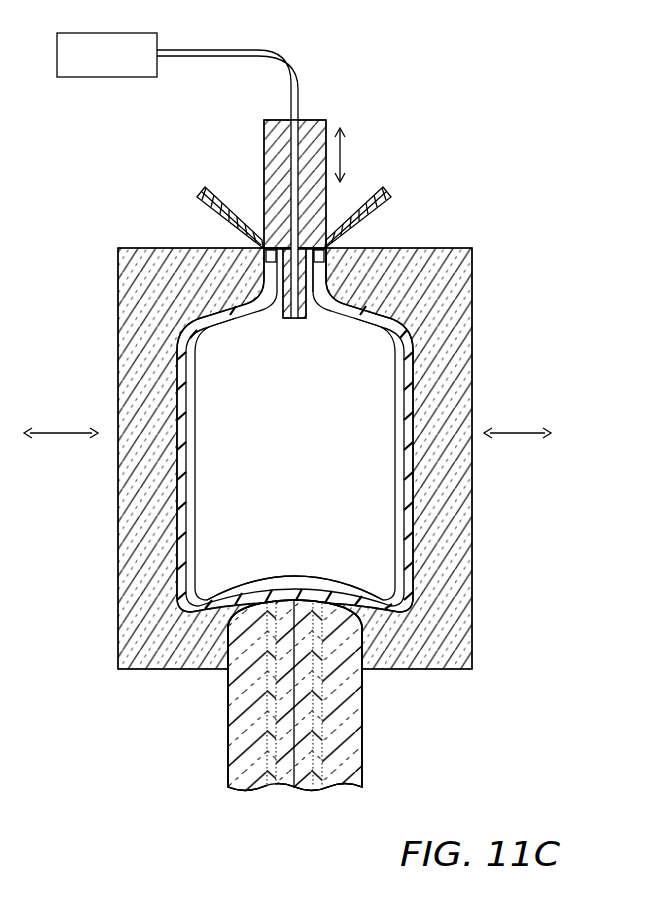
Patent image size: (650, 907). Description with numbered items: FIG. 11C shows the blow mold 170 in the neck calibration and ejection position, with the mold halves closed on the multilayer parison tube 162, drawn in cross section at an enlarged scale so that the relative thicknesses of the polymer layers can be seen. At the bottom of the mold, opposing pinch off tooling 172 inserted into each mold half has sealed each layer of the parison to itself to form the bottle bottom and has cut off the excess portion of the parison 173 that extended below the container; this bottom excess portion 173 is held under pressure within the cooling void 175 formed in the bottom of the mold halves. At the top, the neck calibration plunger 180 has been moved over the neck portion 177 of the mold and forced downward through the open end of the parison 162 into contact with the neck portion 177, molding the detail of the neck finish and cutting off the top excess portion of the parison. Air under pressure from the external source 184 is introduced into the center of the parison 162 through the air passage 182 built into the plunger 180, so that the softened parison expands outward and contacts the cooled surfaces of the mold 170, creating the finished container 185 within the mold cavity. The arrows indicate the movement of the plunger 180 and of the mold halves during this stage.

The parison tube 162 is at (256, 280).
The mold 170 is at (476, 357).
The pinch off tooling 172 is at (294, 572).
The excess portion of the parison 173 is at (222, 725).
The cooling void 175 is at (364, 647).
The neck portion 177 is at (338, 275).
The neck calibration plunger 180 is at (258, 137).
The air passage 182 is at (296, 140).
The external source 184 is at (124, 67).
The finished container 185 is at (420, 512).